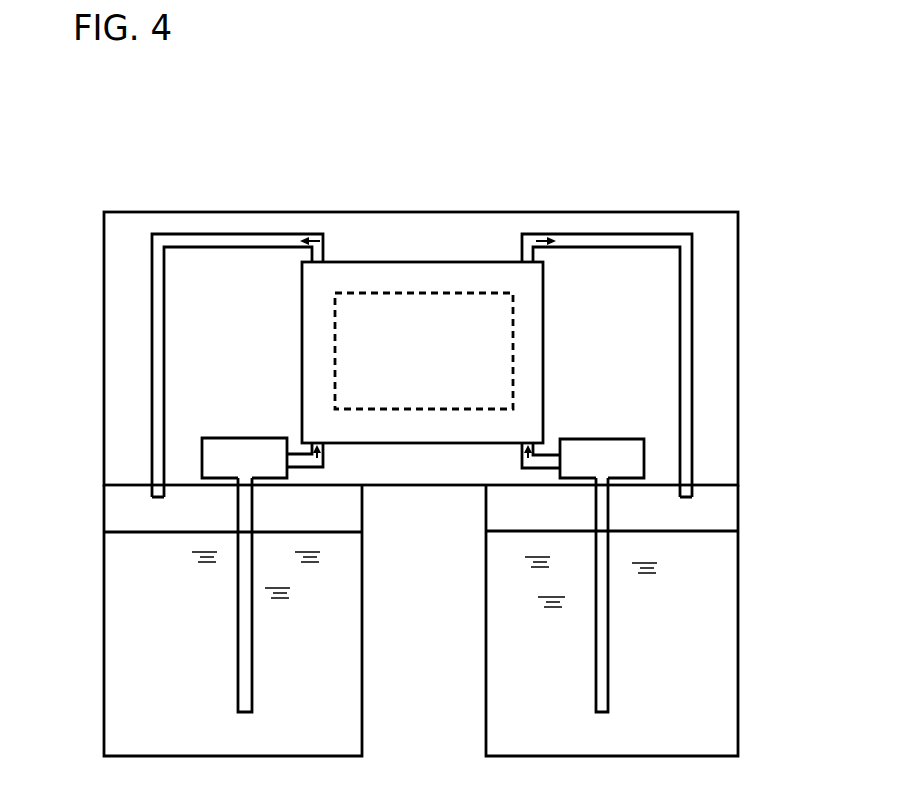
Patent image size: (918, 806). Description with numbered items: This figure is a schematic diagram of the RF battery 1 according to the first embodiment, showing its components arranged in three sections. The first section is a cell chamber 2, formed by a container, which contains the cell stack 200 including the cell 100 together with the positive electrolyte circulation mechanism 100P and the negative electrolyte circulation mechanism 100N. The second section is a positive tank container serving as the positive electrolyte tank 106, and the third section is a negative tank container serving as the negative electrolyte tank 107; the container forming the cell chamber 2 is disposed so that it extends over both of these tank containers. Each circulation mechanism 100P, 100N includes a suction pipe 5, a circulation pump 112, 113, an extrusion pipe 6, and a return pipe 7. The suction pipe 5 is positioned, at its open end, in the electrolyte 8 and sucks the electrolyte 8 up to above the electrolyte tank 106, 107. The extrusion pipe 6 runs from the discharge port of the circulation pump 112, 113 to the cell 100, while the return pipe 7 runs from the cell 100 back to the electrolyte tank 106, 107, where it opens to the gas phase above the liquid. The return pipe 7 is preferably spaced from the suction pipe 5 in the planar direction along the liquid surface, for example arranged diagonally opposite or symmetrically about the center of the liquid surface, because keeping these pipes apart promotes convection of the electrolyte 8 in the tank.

The RF battery 1 is at (122, 181).
The cell chamber 2 is at (382, 212).
The suction pipe 5 is at (238, 630).
The extrusion pipe 6 is at (548, 470).
The return pipe 7 is at (203, 232).
The electrolyte 8 is at (495, 660).
The cell 100 is at (473, 293).
The positive electrolyte circulation mechanism 100P is at (242, 422).
The negative electrolyte circulation mechanism 100N is at (602, 425).
The positive electrolyte tank 106 is at (104, 600).
The negative electrolyte tank 107 is at (738, 600).
The circulation pump 112 is at (202, 458).
The circulation pump 113 is at (644, 458).
The cell stack 200 is at (430, 262).